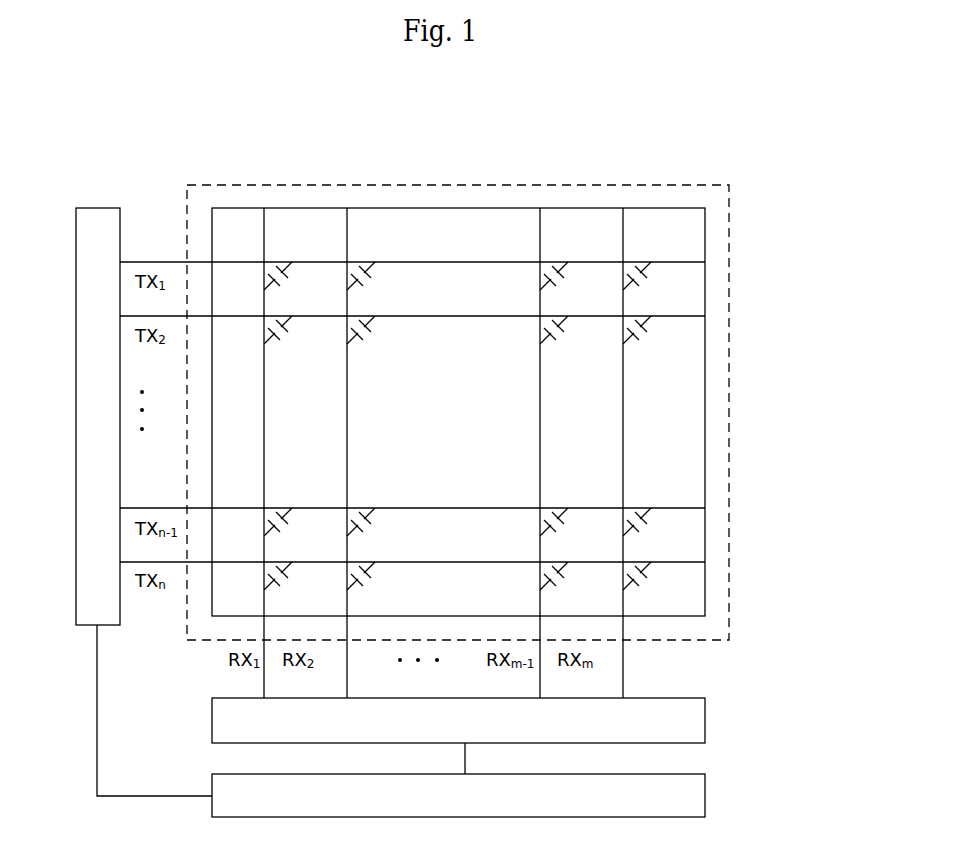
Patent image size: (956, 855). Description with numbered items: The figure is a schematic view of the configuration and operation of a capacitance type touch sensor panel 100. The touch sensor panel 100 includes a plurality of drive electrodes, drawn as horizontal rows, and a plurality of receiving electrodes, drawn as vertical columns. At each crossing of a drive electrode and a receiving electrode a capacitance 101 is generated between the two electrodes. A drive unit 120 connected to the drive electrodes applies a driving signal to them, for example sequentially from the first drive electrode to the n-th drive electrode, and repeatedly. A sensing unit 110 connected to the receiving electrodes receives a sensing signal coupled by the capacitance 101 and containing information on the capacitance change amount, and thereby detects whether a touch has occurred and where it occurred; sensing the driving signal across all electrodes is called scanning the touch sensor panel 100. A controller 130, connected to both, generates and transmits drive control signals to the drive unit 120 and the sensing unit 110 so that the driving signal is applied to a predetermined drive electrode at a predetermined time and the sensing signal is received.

The touch sensor panel 100 is at (721, 185).
The capacitance 101 is at (281, 262).
The sensing unit 110 is at (705, 719).
The drive unit 120 is at (97, 208).
The controller 130 is at (705, 795).